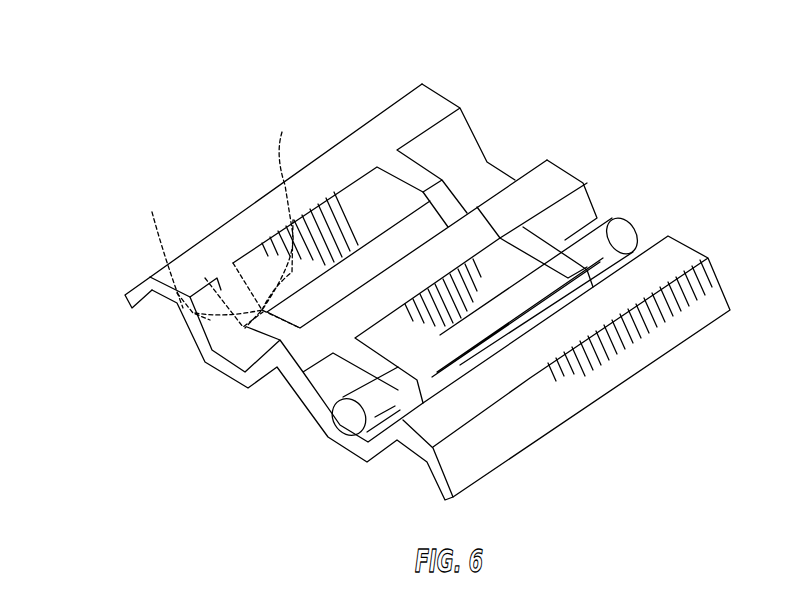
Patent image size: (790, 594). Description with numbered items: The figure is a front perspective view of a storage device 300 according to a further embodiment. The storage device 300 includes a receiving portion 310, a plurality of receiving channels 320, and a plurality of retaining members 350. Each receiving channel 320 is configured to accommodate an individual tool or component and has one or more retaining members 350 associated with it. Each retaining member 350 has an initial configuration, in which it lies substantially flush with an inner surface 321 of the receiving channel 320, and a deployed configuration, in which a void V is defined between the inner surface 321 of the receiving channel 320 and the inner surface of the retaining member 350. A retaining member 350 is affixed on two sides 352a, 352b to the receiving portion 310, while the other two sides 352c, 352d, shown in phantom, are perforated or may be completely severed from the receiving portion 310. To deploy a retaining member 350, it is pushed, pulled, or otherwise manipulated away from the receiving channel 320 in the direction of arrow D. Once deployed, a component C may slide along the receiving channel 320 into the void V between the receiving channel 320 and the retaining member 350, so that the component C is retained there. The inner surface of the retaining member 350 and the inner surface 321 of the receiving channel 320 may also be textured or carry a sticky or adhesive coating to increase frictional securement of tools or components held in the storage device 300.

The storage device 300 is at (99, 122).
The receiving portion 310 is at (683, 257).
The receiving channel 320 is at (235, 357).
The inner surface 321 is at (212, 327).
The retaining member 350 is at (522, 112).
The side 352a is at (220, 270).
The side 352b is at (292, 335).
The side 352c is at (156, 243).
The side 352d is at (273, 213).
The component C is at (610, 222).
The arrow D is at (410, 175).
The void V is at (407, 188).